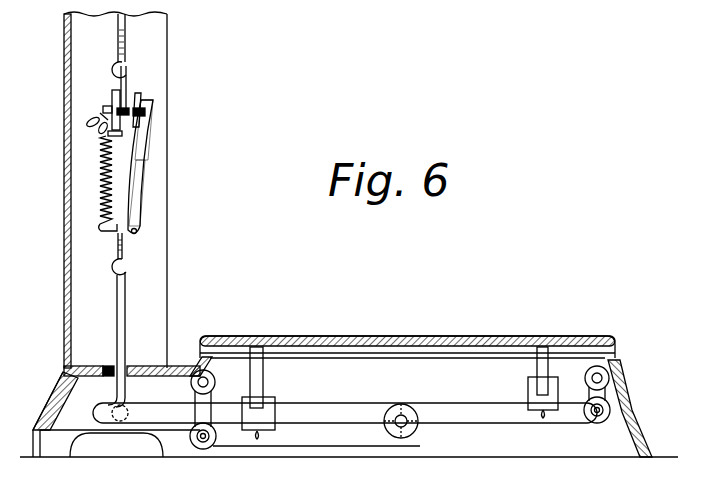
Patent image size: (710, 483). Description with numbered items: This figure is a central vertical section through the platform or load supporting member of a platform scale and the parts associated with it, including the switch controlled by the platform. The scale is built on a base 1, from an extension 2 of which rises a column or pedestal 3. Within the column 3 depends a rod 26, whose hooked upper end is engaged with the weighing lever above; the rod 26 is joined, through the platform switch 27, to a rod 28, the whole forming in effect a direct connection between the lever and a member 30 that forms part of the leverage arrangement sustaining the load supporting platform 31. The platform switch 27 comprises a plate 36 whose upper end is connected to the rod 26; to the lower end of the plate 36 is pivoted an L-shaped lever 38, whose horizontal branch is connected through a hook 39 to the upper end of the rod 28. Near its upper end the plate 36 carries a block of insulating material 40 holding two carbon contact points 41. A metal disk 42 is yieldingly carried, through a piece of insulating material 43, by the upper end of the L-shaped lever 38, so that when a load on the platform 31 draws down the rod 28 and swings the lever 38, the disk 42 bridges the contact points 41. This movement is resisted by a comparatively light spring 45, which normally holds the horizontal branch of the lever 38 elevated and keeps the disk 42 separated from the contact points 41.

The base 1 is at (633, 392).
The extension 2 is at (62, 388).
The column 3 is at (64, 272).
The rod 26 is at (126, 40).
The platform switch 27 is at (102, 178).
The rod 28 is at (124, 299).
The member 30 is at (155, 413).
The platform 31 is at (421, 341).
The plate 36 is at (158, 158).
The L-shaped lever 38 is at (140, 185).
The hook 39 is at (123, 253).
The block of insulating material 40 is at (112, 94).
The carbon contact points 41 is at (130, 95).
The metal disk 42 is at (140, 94).
The piece of insulating material 43 is at (152, 127).
The spring 45 is at (105, 155).